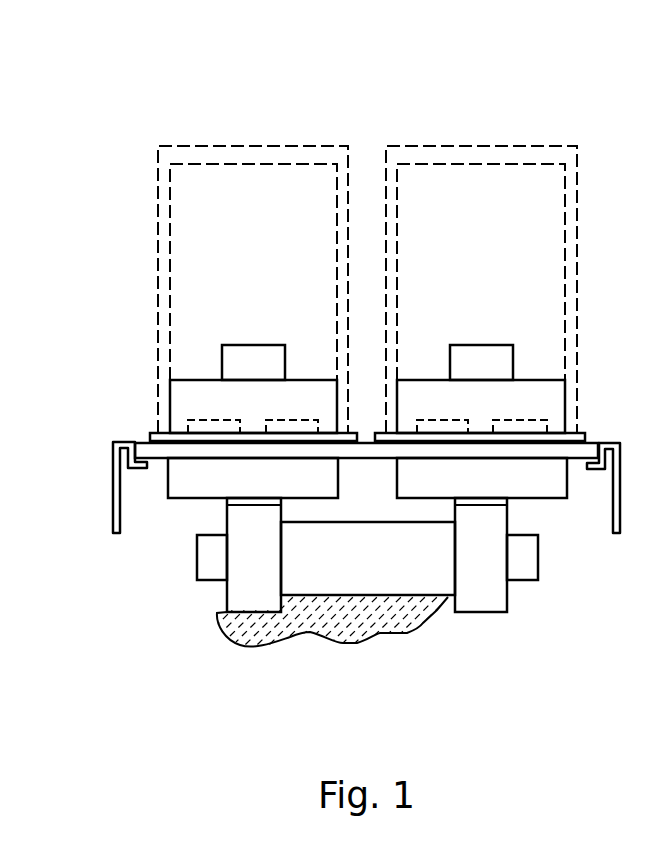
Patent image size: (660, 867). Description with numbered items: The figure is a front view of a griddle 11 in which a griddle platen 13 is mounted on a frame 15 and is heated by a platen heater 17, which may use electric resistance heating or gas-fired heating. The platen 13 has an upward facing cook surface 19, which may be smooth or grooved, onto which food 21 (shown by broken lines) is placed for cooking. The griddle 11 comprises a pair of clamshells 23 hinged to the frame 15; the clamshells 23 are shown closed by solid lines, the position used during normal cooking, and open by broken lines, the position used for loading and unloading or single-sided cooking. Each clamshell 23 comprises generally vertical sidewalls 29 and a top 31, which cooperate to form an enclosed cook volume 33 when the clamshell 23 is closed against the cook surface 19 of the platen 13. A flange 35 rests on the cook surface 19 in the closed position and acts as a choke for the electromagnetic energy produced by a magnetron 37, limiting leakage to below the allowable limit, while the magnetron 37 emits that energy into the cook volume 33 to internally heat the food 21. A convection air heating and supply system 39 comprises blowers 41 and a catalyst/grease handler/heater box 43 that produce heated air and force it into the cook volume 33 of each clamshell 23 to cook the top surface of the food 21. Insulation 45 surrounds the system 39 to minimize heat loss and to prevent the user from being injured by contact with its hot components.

The griddle 11 is at (457, 106).
The griddle platen 13 is at (147, 440).
The frame 15 is at (112, 507).
The platen heater 17 is at (168, 492).
The cook surface 19 is at (255, 437).
The food 21 is at (202, 420).
The clamshell 23 is at (195, 140).
The sidewalls 29 is at (567, 413).
The top 31 is at (493, 197).
The cook volume 33 is at (422, 403).
The flange 35 is at (262, 152).
The magnetron 37 is at (252, 345).
The convection air heating and supply system 39 is at (486, 620).
The blowers 41 is at (243, 595).
The catalyst/grease handler/heater box 43 is at (392, 567).
The insulation 45 is at (300, 623).